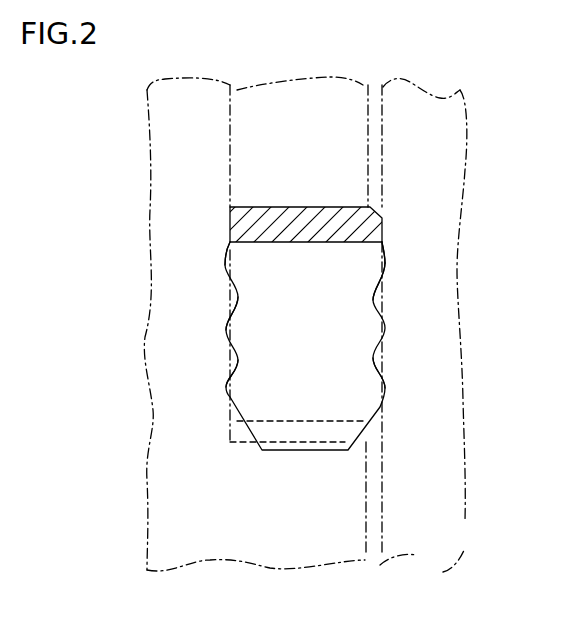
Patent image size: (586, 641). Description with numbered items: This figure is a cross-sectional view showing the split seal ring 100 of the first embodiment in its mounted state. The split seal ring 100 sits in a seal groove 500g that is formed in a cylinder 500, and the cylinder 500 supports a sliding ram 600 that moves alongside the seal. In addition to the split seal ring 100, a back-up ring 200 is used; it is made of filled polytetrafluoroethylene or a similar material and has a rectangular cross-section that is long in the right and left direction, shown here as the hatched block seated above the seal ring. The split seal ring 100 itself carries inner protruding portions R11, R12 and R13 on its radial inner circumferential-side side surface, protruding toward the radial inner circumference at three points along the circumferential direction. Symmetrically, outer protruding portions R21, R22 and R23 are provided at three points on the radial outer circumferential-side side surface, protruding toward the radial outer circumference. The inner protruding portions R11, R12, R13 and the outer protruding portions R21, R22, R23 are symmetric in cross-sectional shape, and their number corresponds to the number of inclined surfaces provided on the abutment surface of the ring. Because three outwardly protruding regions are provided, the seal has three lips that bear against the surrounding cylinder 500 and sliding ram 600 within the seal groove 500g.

The split seal ring 100 is at (353, 405).
The back-up ring 200 is at (356, 232).
The cylinder 500 is at (270, 527).
The seal groove 500g is at (228, 436).
The sliding ram 600 is at (420, 527).
The inner protruding portion R11 is at (386, 265).
The inner protruding portion R12 is at (386, 328).
The inner protruding portion R13 is at (386, 388).
The outer protruding portion R21 is at (226, 266).
The outer protruding portion R22 is at (226, 331).
The outer protruding portion R23 is at (226, 388).